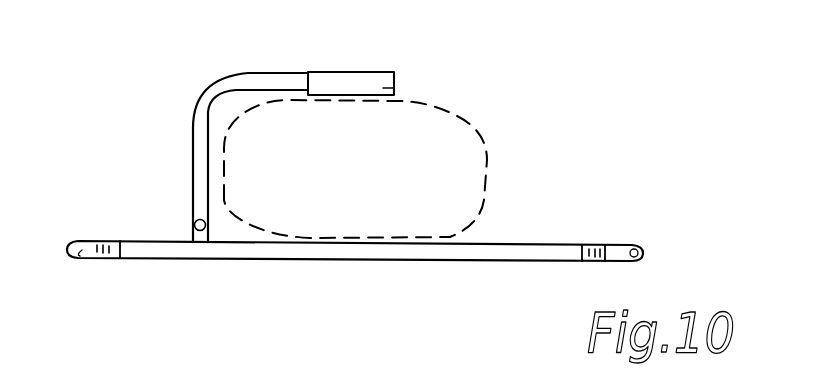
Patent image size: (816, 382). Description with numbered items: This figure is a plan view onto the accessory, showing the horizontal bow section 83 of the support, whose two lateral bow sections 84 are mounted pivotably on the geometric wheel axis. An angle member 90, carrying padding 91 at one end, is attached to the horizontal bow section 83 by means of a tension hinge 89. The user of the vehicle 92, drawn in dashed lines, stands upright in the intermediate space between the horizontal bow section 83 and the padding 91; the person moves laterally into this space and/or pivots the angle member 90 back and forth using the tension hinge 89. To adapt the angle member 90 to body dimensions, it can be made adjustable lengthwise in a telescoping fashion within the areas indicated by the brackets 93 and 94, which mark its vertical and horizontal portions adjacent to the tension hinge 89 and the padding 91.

The horizontal bow section 83 is at (260, 252).
The lateral bow sections 84 is at (72, 252).
The tension hinge 89 is at (195, 223).
The angle member 90 is at (235, 85).
The padding 91 is at (394, 88).
The user of the vehicle 92 is at (467, 162).
The bracket 93 is at (192, 128).
The bracket 94 is at (306, 70).